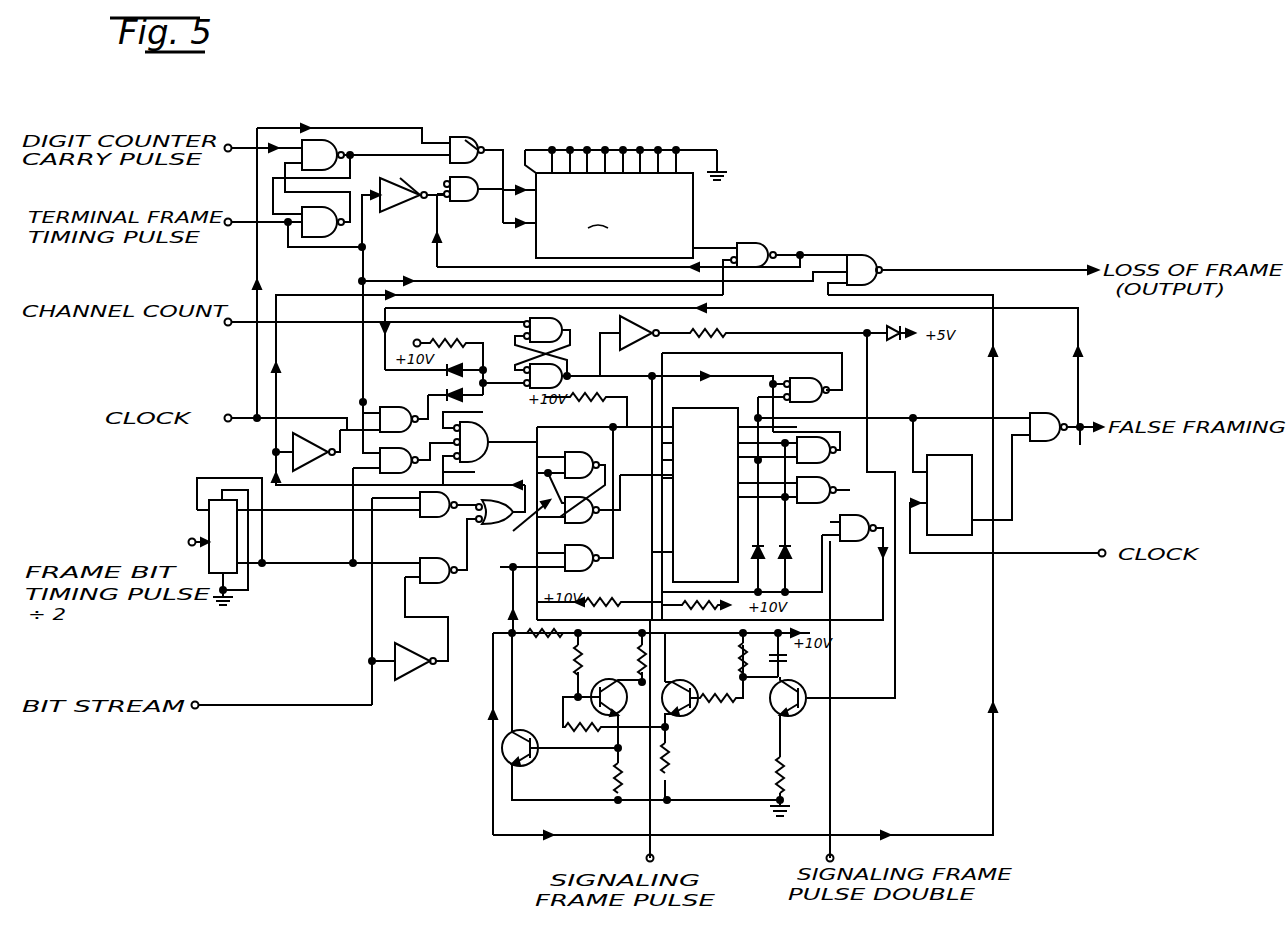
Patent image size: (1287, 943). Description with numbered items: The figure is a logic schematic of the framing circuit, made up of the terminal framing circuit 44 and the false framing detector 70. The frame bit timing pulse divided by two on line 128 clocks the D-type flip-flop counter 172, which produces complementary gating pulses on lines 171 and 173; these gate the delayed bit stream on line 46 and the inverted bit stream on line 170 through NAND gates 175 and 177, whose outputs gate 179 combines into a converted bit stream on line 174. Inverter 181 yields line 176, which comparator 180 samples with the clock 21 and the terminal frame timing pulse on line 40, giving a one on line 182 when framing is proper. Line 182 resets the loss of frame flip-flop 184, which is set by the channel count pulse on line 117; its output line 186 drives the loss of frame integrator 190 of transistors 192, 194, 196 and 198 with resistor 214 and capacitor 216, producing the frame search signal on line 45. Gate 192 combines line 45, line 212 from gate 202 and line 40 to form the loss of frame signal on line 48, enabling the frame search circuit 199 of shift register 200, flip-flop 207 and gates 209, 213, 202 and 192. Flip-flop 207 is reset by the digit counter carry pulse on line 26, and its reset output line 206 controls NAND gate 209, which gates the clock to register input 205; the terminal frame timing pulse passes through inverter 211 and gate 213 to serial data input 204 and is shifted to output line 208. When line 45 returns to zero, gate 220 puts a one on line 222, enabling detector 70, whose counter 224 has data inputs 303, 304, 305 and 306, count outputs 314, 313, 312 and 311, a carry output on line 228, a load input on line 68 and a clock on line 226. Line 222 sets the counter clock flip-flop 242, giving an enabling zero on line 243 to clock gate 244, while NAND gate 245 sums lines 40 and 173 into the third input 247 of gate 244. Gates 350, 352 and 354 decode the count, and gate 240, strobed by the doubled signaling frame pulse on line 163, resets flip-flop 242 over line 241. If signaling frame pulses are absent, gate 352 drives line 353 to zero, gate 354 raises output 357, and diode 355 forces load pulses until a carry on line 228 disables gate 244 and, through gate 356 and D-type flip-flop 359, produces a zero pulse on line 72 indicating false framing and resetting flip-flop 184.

The digit counter carry pulse line 26 is at (233, 144).
The terminal frame timing pulse line 40 is at (232, 218).
The flip-flop 207 is at (300, 180).
The reset output line 206 is at (342, 155).
The inverter 211 is at (384, 212).
The gate 213 is at (445, 192).
The NAND gate 209 is at (462, 136).
The terminal framing circuit 44 is at (483, 137).
The clock input 205 is at (503, 148).
The serial data input 204 is at (520, 190).
The shift register 200 is at (614, 215).
The frame search circuit 199 is at (620, 146).
The gate 202 is at (765, 243).
The output line 208 is at (745, 244).
The line 212 is at (803, 252).
The gate 192 is at (868, 258).
The loss of frame signal line 48 is at (1012, 271).
The frame search signal line 45 is at (945, 295).
The gated bit stream line 174 is at (728, 295).
The false framing line 72 is at (383, 338).
The channel count line 117 is at (242, 326).
The clock input 21 is at (238, 414).
The inverter 181 is at (312, 425).
The converted bit stream line 176 is at (350, 428).
The comparator 180 is at (383, 380).
The in-frame output line 182 is at (370, 402).
The NAND gate 245 is at (383, 458).
The clock line 226 is at (522, 450).
The clock gate 244 is at (467, 428).
The third input 247 is at (462, 470).
The loss of frame flip-flop 184 is at (580, 328).
The flip-flop output line 186 is at (598, 358).
The diode 355 is at (707, 372).
The gate 354 is at (815, 385).
The gate output 357 is at (845, 368).
The carry output line 228 is at (750, 412).
The gate output line 353 is at (838, 447).
The gate 352 is at (818, 435).
The gate 350 is at (824, 476).
The count output 312 is at (740, 448).
The count output 314 is at (752, 435).
The count output 313 is at (752, 452).
The count output 311 is at (740, 485).
The D-type flip-flop 359 is at (968, 457).
The gate 356 is at (1050, 412).
The false framing detector 70 is at (1080, 473).
The gate 240 is at (872, 515).
The reset line 241 is at (888, 610).
The false framing detector counter 224 is at (660, 583).
The data input 305 is at (605, 478).
The data input 303 is at (606, 468).
The data input 304 is at (646, 478).
The enable line 222 is at (615, 538).
The counter clock flip-flop 242 is at (511, 527).
The data input 306 is at (600, 561).
The gate 220 is at (560, 570).
The gating pulse line 171 is at (285, 512).
The counter flip-flop 172 is at (208, 511).
The frame bit timing pulse divided by two line 128 is at (188, 542).
The complementary gating pulse line 173 is at (285, 566).
The NAND gate 175 is at (418, 515).
The enable line 243 is at (468, 501).
The gate 179 is at (478, 518).
The NAND gate 177 is at (428, 560).
The inverted bit stream line 170 is at (405, 612).
The delayed bit stream line 46 is at (210, 708).
The loss of frame integrator 190 is at (798, 747).
The transistor 198 is at (530, 765).
The transistor 196 is at (612, 682).
The transistor 194 is at (690, 712).
The resistor 214 is at (740, 655).
The capacitor 216 is at (797, 658).
The signaling frame pulse line 68 is at (650, 820).
The signaling frame pulse doubled line 163 is at (830, 812).